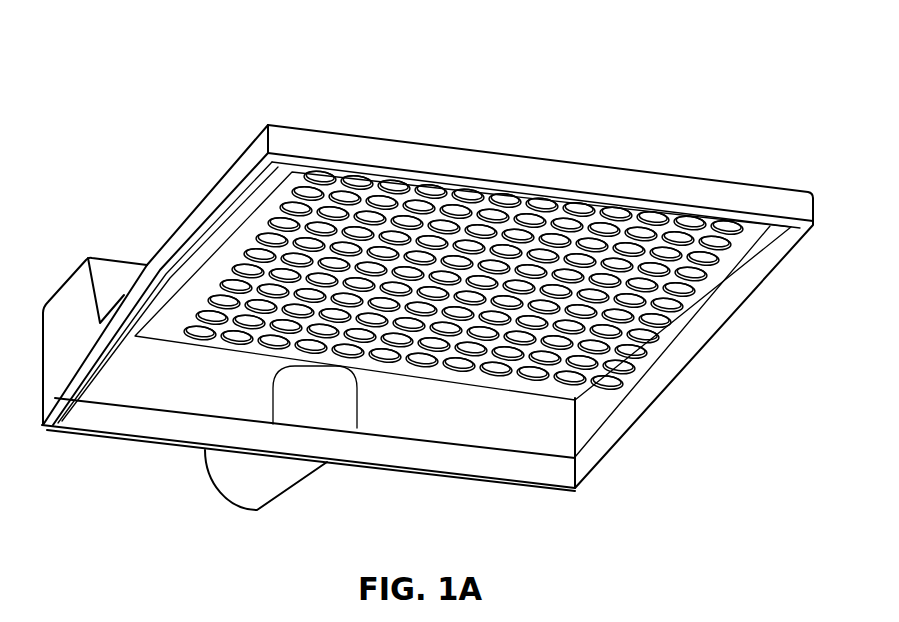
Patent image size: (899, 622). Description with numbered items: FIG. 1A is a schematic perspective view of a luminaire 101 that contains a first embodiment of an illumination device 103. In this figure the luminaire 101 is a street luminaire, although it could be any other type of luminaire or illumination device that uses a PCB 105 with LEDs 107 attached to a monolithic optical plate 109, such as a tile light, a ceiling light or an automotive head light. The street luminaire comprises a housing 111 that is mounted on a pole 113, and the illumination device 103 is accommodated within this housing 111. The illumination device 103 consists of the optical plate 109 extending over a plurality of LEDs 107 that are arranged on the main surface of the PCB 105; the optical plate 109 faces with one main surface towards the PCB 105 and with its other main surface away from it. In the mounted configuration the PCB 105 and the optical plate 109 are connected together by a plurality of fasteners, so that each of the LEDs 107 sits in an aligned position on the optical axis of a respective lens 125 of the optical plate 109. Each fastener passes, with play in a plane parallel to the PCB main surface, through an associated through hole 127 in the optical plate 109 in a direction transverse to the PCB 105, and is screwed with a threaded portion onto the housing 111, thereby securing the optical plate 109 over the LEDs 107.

The luminaire 101 is at (775, 163).
The illumination device 103 is at (453, 400).
The PCB 105 is at (250, 222).
The LEDs 107 is at (463, 207).
The optical plate 109 is at (676, 280).
The housing 111 is at (625, 413).
The pole 113 is at (253, 493).
The lens 125 is at (463, 207).
The through hole 127 is at (438, 172).